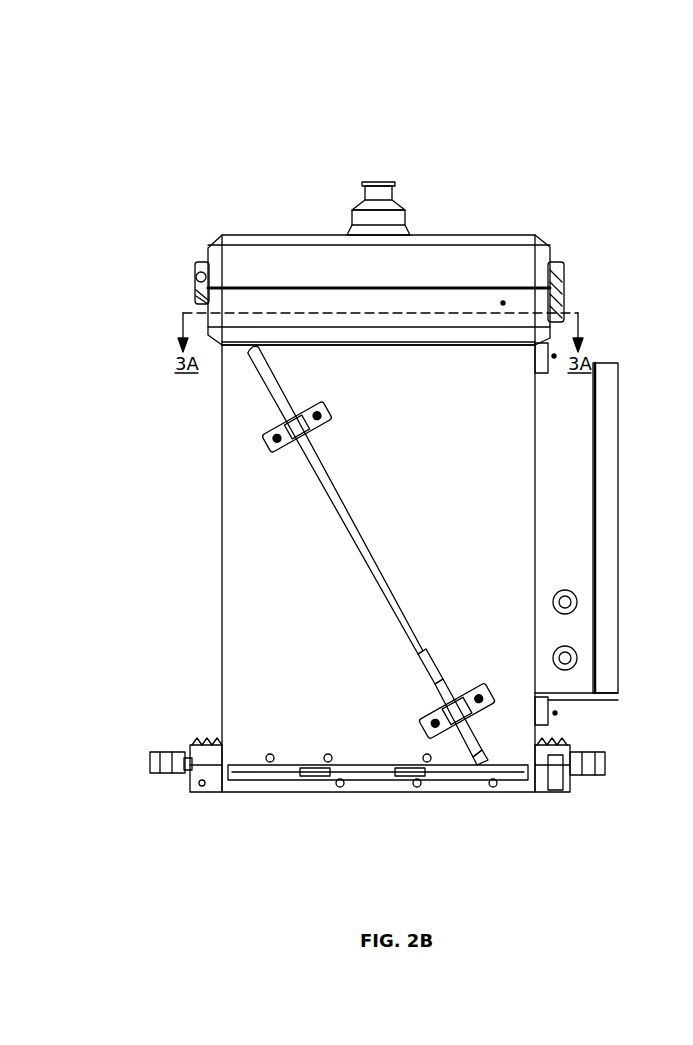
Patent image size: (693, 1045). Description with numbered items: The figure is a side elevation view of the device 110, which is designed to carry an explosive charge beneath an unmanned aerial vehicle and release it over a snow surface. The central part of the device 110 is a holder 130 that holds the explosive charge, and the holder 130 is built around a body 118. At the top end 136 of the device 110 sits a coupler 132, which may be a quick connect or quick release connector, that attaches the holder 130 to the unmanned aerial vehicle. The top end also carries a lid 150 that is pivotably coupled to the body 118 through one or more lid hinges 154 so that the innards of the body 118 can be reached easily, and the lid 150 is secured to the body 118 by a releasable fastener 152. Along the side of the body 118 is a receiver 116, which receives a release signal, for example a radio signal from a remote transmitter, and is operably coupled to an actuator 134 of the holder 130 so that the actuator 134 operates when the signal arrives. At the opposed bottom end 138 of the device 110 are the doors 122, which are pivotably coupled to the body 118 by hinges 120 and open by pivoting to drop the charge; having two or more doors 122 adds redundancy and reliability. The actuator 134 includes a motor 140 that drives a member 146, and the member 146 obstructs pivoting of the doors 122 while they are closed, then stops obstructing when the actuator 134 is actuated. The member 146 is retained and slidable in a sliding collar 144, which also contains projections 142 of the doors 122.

The device 110 is at (595, 95).
The receiver 116 is at (607, 365).
The body 118 is at (222, 548).
The hinges 120 is at (330, 785).
The doors 122 is at (375, 782).
The holder 130 is at (212, 452).
The coupler 132 is at (395, 182).
The actuator 134 is at (162, 725).
The top end 136 is at (135, 165).
The bottom end 138 is at (358, 828).
The motor 140 is at (150, 757).
The projections 142 is at (215, 795).
The sliding collar 144 is at (188, 790).
The member 146 is at (200, 788).
The lid 150 is at (280, 235).
The releasable fastener 152 is at (555, 275).
The lid hinges 154 is at (197, 277).